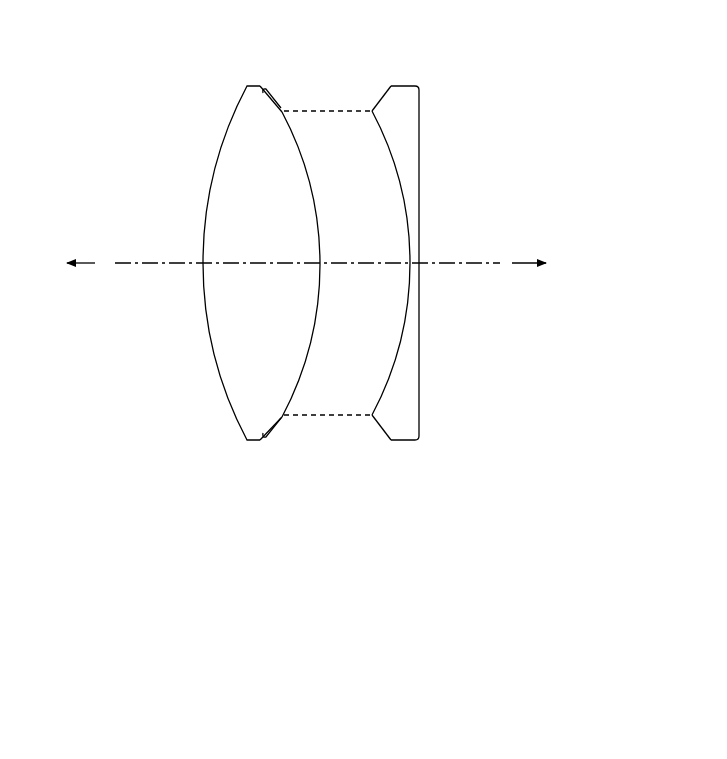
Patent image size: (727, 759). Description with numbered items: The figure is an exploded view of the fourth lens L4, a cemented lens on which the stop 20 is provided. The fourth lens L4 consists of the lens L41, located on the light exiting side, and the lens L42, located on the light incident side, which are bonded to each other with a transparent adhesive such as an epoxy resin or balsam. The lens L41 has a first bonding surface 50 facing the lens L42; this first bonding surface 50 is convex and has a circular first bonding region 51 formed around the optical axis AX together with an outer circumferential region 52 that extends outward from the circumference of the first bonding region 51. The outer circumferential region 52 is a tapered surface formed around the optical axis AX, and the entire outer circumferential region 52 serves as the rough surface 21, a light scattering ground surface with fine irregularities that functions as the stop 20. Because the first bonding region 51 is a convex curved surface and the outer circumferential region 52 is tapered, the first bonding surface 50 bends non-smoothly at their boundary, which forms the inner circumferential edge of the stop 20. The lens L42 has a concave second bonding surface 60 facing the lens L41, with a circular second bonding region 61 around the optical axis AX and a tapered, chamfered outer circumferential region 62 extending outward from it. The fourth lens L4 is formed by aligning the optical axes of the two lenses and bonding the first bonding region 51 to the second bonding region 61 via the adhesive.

The fourth lens L4 is at (135, 112).
The lens L41 is at (215, 422).
The lens L42 is at (430, 423).
The first bonding surface 50 is at (317, 521).
The first bonding region 51 is at (297, 392).
The outer circumferential region 52 is at (278, 92).
The second bonding surface 60 is at (420, 521).
The second bonding region 61 is at (374, 407).
The outer circumferential region 62 is at (380, 86).
The rough surface 21 is at (260, 263).
The stop 20 is at (307, 266).
The optical axis AX is at (131, 263).